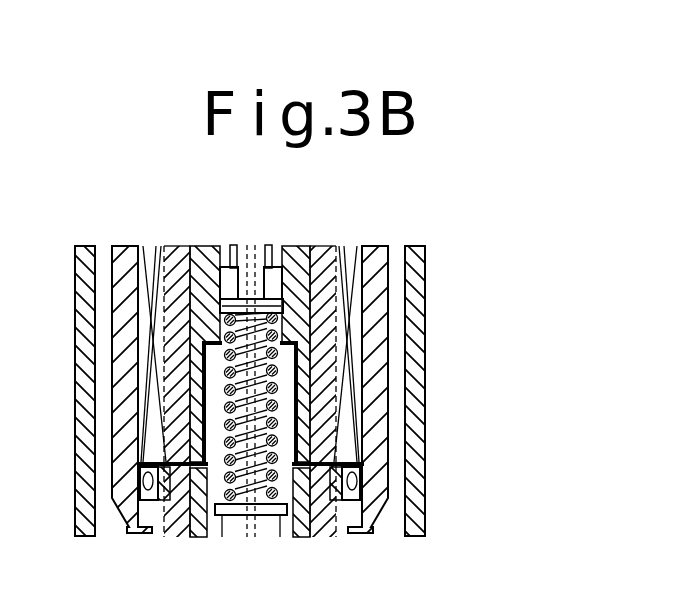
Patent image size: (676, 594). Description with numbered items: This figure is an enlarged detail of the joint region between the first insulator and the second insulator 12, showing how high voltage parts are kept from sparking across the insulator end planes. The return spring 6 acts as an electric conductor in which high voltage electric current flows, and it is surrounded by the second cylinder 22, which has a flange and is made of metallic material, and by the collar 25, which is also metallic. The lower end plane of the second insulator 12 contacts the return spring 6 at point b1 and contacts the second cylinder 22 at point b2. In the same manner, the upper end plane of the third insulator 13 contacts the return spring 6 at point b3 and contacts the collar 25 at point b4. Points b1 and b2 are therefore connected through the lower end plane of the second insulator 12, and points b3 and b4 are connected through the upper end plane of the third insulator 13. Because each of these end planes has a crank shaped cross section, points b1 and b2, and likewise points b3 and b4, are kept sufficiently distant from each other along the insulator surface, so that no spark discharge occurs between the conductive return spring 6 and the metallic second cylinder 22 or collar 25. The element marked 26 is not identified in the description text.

The second insulator 12 is at (204, 273).
The second cylinder 22 is at (318, 265).
The housing wall 26 is at (372, 273).
The contact point b1 is at (300, 318).
The contact point b2 is at (340, 433).
The contact point b3 is at (285, 344).
The contact point b4 is at (363, 490).
The return spring 6 is at (245, 462).
The third insulator 13 is at (308, 506).
The collar 25 is at (316, 506).